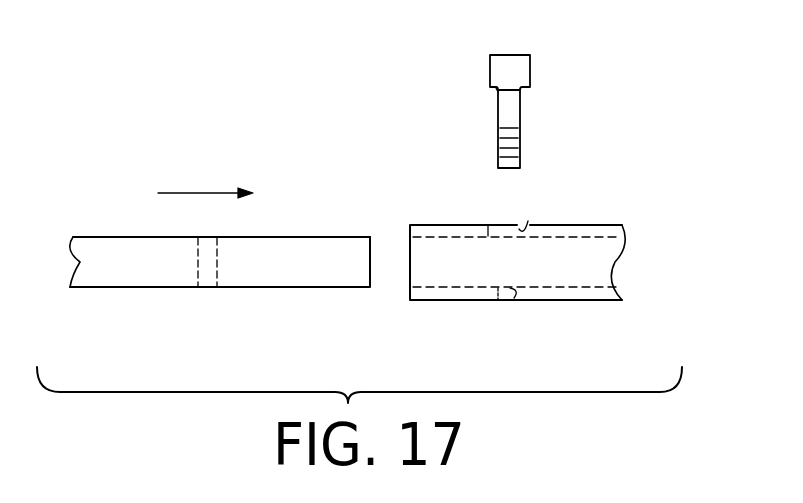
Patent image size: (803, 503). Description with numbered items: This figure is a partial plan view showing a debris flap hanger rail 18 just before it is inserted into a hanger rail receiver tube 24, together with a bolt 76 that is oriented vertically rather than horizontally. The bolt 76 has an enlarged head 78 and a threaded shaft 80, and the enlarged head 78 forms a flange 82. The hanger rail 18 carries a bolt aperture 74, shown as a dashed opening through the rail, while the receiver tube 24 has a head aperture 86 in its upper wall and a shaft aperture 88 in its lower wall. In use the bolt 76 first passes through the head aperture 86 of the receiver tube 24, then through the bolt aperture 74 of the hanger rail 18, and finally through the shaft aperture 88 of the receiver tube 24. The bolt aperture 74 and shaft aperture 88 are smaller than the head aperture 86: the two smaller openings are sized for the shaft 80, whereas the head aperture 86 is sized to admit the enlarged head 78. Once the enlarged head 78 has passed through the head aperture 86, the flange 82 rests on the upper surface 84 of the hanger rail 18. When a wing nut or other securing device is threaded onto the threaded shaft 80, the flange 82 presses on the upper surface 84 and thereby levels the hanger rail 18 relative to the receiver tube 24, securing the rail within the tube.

The debris flap hanger rail 18 is at (107, 245).
The hanger rail receiver tube 24 is at (607, 300).
The bolt aperture 74 is at (215, 275).
The bolt 76 is at (518, 84).
The enlarged head 78 is at (517, 62).
The threaded shaft 80 is at (515, 117).
The flange 82 is at (496, 91).
The upper surface 84 is at (298, 237).
The head aperture 86 is at (525, 228).
The shaft aperture 88 is at (514, 298).